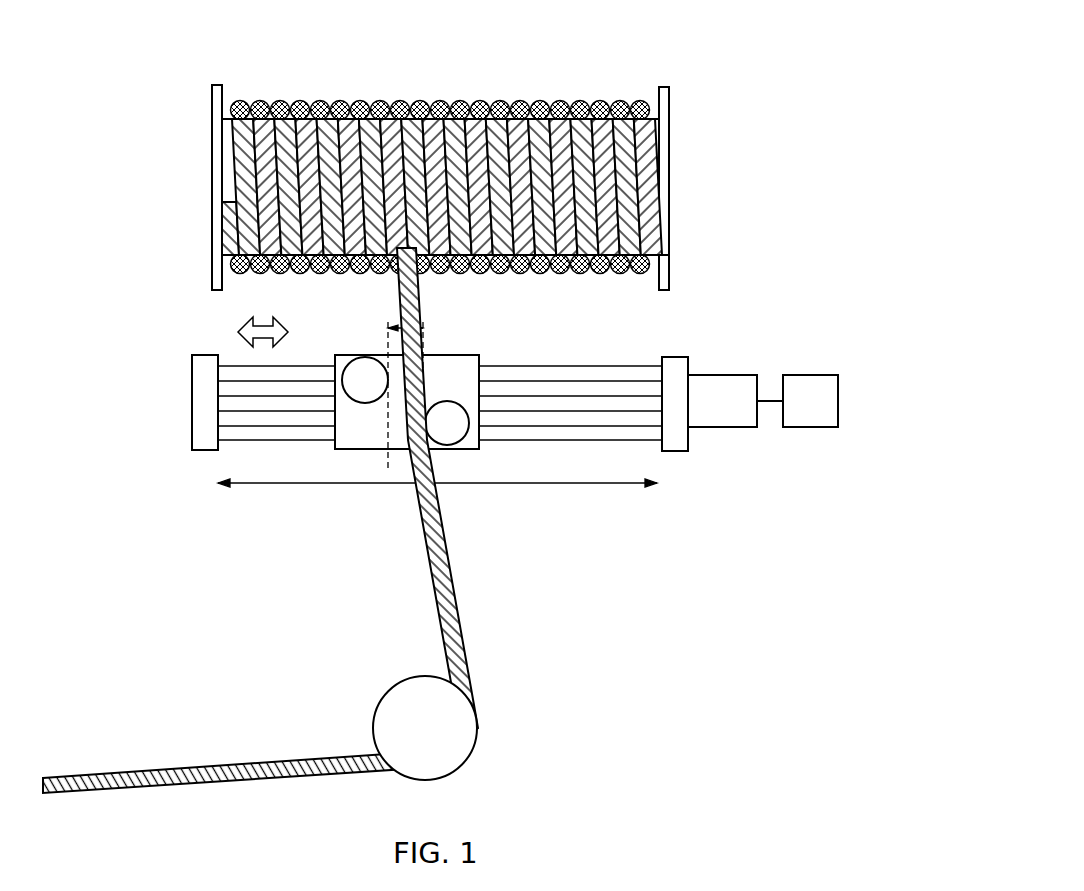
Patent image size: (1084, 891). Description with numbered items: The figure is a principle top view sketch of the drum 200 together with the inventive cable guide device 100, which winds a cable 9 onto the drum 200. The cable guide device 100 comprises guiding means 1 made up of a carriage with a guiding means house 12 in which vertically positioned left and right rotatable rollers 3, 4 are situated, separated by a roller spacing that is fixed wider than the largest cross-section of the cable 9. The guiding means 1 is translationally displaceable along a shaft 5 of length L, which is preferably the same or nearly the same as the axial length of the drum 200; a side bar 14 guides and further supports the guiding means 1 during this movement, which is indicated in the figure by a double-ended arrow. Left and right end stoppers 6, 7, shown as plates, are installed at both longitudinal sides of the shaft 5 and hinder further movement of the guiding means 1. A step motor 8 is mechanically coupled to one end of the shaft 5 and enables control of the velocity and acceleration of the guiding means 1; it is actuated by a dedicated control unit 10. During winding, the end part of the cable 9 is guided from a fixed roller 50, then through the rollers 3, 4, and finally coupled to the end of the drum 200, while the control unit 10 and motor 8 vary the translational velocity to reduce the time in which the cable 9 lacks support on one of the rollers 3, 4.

The drum 200 is at (712, 79).
The cable guide device 100 is at (747, 379).
The guiding means 1 is at (490, 402).
The left rotatable roller 3 is at (365, 380).
The right rotatable roller 4 is at (447, 423).
The shaft 5 is at (600, 381).
The left end stopper 6 is at (205, 414).
The right end stopper 7 is at (678, 442).
The step motor 8 is at (729, 412).
The cable 9 is at (456, 580).
The control unit 10 is at (804, 418).
The guiding means house 12 is at (480, 450).
The side guiding bar 14 is at (637, 367).
The fixed roller 50 is at (478, 732).